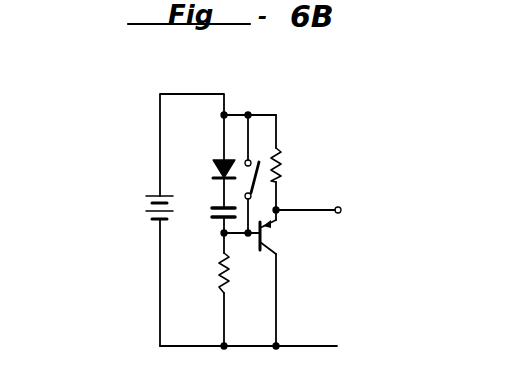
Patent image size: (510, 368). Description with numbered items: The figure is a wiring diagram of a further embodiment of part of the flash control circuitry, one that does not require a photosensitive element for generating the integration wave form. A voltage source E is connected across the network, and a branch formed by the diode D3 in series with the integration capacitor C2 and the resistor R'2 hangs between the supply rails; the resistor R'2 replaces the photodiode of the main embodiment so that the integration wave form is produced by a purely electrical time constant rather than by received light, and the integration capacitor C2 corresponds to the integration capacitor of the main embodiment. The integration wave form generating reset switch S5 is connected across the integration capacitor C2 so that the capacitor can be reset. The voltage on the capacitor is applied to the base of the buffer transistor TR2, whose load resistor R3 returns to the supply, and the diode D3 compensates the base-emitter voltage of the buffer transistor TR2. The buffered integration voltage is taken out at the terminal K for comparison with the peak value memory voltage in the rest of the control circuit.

The voltage source E is at (148, 206).
The diode D3 is at (213, 164).
The integration capacitor C2 is at (212, 212).
The resistor R'2 is at (205, 279).
The integration wave form generating reset switch S5 is at (259, 161).
The load resistor R3 is at (282, 163).
The buffer transistor TR2 is at (279, 238).
The output terminal K is at (315, 219).